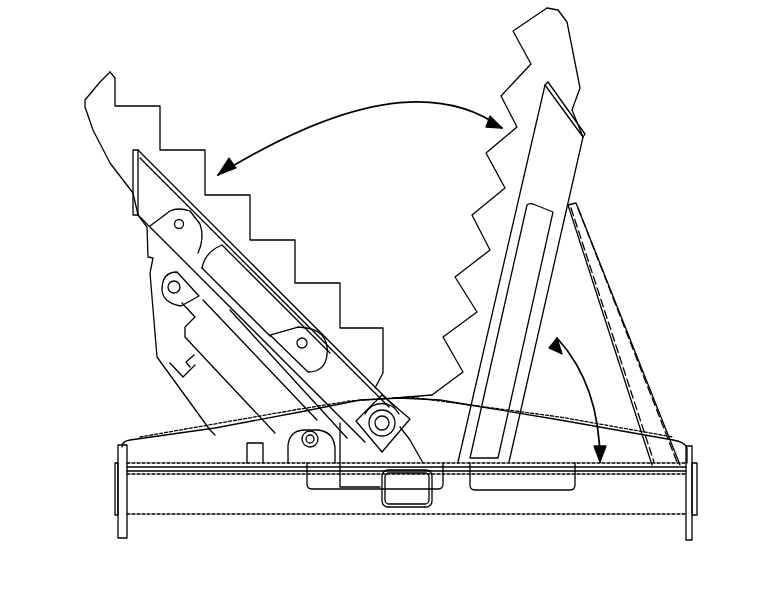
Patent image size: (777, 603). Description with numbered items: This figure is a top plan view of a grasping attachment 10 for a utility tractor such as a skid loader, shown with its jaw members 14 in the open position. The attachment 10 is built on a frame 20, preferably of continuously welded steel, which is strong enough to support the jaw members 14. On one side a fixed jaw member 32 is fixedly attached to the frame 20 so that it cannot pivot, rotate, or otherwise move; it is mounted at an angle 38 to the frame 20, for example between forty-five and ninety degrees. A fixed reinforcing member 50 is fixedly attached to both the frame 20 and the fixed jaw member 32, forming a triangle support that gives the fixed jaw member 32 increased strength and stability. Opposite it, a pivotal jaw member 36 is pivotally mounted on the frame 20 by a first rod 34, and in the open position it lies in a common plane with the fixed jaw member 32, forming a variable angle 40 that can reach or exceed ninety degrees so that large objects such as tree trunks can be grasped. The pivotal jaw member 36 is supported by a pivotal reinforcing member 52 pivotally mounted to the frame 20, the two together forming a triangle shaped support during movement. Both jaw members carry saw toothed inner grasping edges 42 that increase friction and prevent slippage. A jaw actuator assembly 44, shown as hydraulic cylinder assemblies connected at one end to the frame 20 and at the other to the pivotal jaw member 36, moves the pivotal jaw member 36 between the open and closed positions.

The grasping attachment 10 is at (200, 40).
The jaw members 14 is at (98, 88).
The frame 20 is at (155, 492).
The fixed jaw member 32 is at (563, 177).
The first rod 34 is at (385, 410).
The pivotal jaw member 36 is at (160, 207).
The angle 38 is at (590, 373).
The angle 40 is at (357, 110).
The saw toothed inner grasping edges 42 is at (238, 213).
The jaw actuator assembly 44 is at (222, 372).
The fixed reinforcing member 50 is at (545, 258).
The pivotal reinforcing member 52 is at (255, 297).